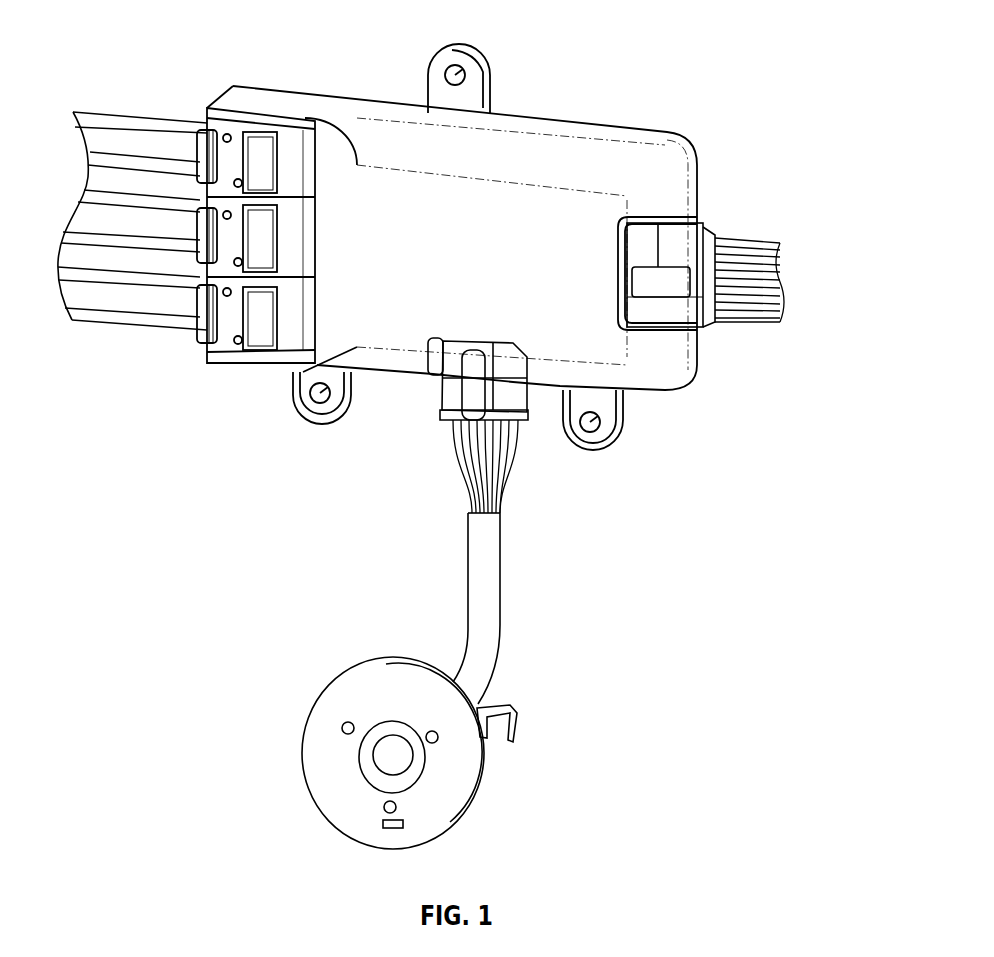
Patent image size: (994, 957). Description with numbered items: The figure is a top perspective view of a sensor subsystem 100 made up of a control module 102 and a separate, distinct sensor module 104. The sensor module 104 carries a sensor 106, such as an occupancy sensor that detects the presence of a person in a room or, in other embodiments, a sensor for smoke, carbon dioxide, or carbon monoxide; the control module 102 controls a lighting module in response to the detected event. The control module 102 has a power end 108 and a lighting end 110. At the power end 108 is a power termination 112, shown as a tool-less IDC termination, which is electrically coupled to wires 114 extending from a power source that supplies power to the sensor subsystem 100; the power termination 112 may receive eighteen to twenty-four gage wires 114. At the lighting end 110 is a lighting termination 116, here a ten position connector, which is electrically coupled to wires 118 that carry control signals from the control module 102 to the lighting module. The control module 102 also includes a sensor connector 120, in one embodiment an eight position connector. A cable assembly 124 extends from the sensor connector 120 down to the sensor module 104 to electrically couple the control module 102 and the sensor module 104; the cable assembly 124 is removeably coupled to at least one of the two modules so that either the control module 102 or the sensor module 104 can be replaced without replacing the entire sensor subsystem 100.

The sensor subsystem 100 is at (632, 48).
The control module 102 is at (670, 177).
The sensor module 104 is at (460, 787).
The sensor 106 is at (390, 755).
The power end 108 is at (158, 371).
The lighting end 110 is at (692, 404).
The power termination 112 is at (233, 160).
The wires 114 is at (90, 318).
The lighting termination 116 is at (683, 250).
The wires 118 is at (773, 260).
The sensor connector 120 is at (443, 370).
The cable assembly 124 is at (488, 587).